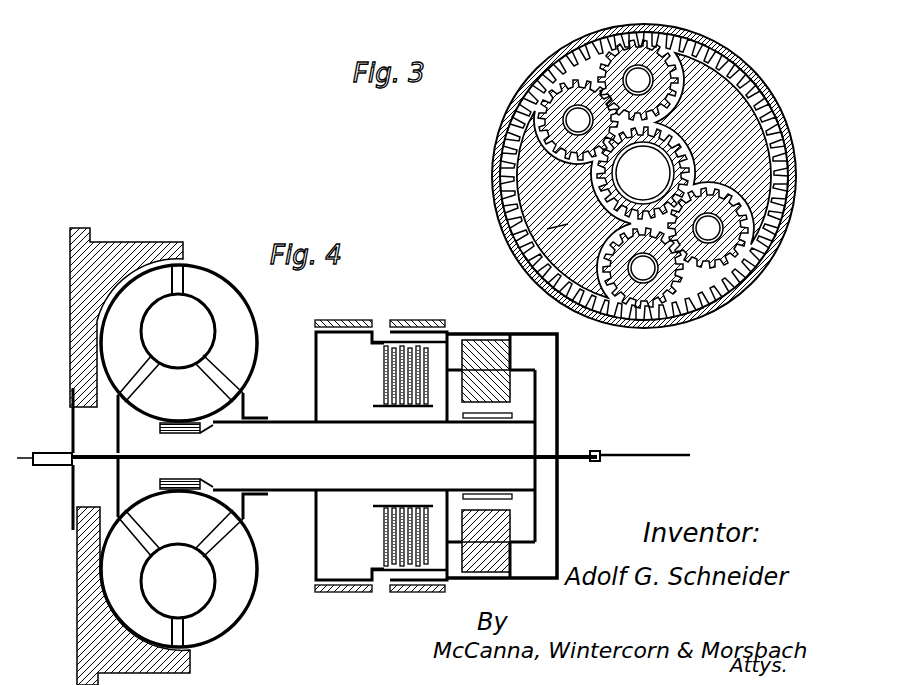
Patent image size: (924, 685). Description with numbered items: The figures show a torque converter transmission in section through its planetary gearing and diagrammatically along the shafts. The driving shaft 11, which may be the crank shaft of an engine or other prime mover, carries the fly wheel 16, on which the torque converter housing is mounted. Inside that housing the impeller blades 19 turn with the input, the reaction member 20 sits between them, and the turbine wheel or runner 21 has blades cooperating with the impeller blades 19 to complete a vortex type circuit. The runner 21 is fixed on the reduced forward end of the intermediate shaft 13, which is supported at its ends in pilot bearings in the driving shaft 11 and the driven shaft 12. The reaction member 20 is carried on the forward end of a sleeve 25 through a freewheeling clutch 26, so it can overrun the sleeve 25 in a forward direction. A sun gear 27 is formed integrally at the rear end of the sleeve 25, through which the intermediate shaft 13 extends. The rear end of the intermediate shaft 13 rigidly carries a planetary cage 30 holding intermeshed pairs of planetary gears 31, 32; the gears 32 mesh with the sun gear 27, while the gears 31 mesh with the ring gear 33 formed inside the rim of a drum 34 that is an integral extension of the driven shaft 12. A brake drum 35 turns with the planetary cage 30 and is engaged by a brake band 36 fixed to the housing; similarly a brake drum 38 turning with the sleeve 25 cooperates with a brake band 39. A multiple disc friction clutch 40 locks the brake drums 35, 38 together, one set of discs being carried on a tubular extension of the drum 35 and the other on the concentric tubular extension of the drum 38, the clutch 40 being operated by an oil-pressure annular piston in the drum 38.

In FIG. 4, the driving shaft 11 is at (23, 453).
In FIG. 4, the driven shaft 12 is at (630, 450).
In FIG. 3, the intermediate shaft 13 is at (597, 195).
In FIG. 4, the intermediate shaft 13 is at (370, 455).
In FIG. 4, the fly wheel 16 is at (82, 565).
In FIG. 4, the impeller blades 19 is at (237, 320).
In FIG. 4, the reaction member 20 is at (148, 403).
In FIG. 4, the turbine wheel or runner 21 is at (108, 343).
In FIG. 3, the sleeve 25 is at (522, 237).
In FIG. 4, the sleeve 25 is at (283, 422).
In FIG. 4, the freewheeling clutch 26 is at (175, 420).
In FIG. 3, the sun gear 27 is at (757, 100).
In FIG. 4, the sun gear 27 is at (513, 415).
In FIG. 3, the planetary cage 30 is at (528, 272).
In FIG. 4, the planetary cage 30 is at (535, 428).
In FIG. 3, the planetary gears 31 is at (660, 33).
In FIG. 4, the planetary gears 31 is at (507, 355).
In FIG. 3, the planetary gears 32 is at (530, 127).
In FIG. 4, the planetary gears 32 is at (513, 537).
In FIG. 3, the ring gear 33 is at (708, 65).
In FIG. 3, the drum 34 is at (570, 45).
In FIG. 4, the brake drum 35 is at (447, 333).
In FIG. 4, the brake band 36 is at (410, 320).
In FIG. 4, the brake drum 38 is at (316, 366).
In FIG. 4, the brake band 39 is at (340, 320).
In FIG. 4, the multiple disc friction clutch 40 is at (373, 388).